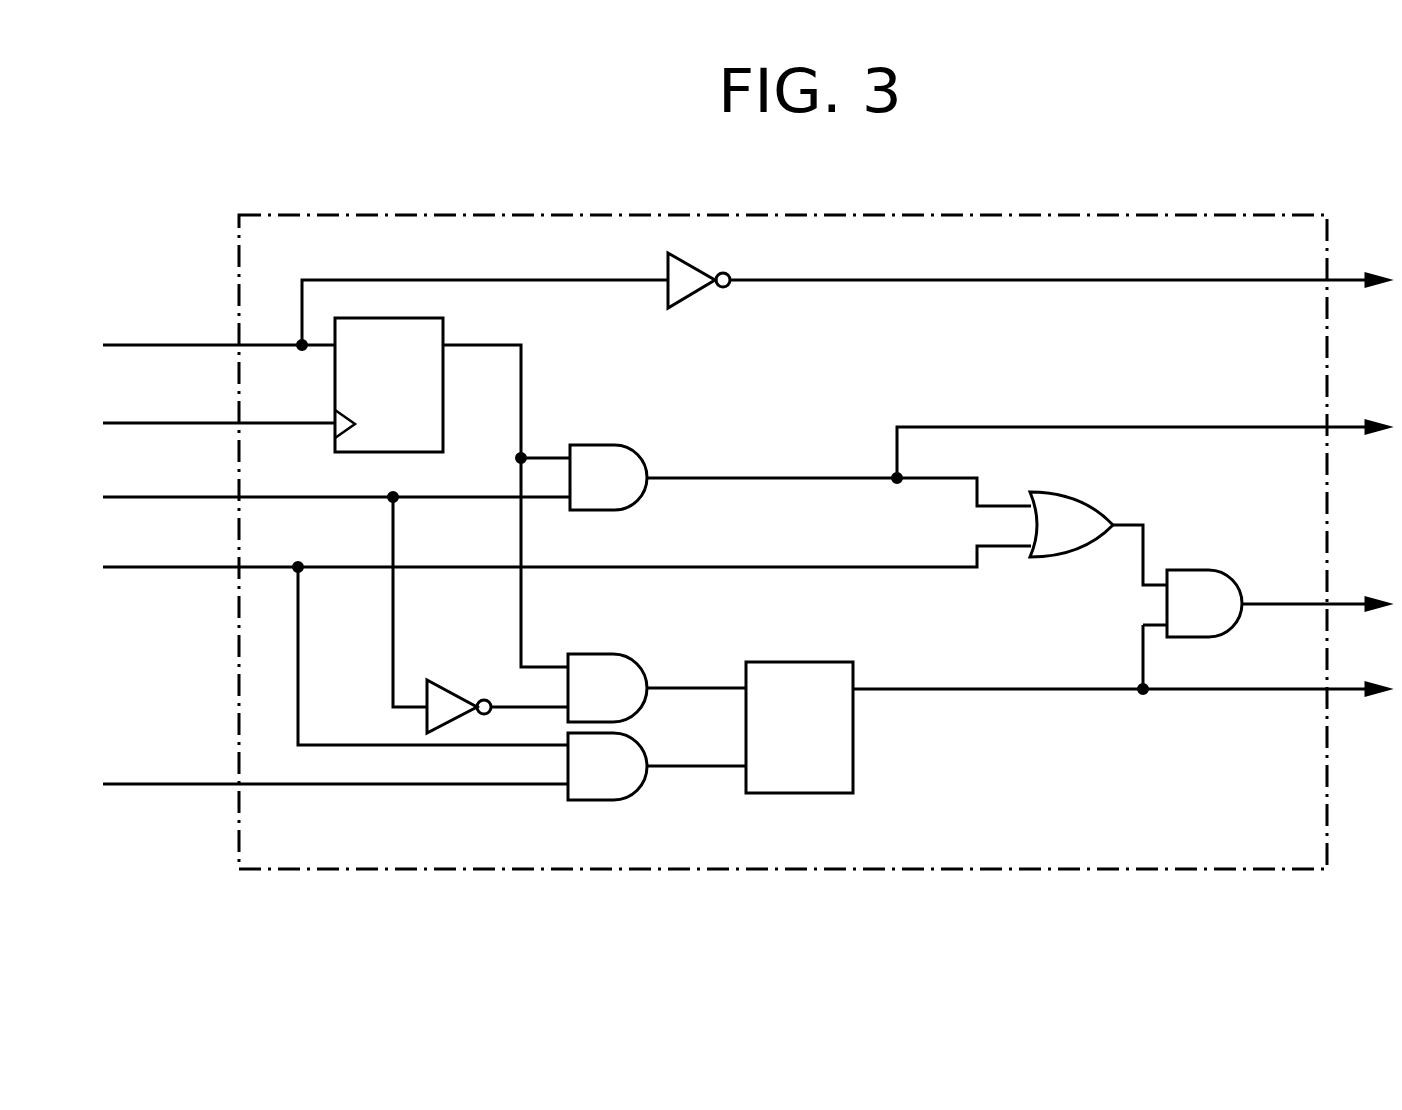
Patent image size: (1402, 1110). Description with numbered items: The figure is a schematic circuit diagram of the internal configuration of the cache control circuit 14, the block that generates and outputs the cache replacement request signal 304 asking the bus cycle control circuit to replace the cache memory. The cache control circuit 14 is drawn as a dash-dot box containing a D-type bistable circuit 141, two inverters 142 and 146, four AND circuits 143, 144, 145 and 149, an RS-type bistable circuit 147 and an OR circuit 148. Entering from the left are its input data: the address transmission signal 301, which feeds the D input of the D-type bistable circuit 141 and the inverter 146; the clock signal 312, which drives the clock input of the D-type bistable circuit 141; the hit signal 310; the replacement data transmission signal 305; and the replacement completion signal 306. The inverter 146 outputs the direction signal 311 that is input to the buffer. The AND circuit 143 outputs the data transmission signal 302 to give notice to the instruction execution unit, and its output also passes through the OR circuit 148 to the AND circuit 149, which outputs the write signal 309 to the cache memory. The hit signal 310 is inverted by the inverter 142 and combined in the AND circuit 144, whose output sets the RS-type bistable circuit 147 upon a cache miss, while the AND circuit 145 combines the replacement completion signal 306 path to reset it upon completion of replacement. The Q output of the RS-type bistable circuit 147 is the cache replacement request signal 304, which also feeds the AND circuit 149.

The cache control circuit 14 is at (928, 215).
The D-type bistable circuit 141 is at (443, 328).
The inverter 142 is at (445, 680).
The AND circuit 143 is at (643, 460).
The AND circuit 144 is at (607, 652).
The AND circuit 145 is at (613, 800).
The inverter 146 is at (693, 298).
The RS-type bistable circuit 147 is at (853, 758).
The OR circuit 148 is at (1050, 558).
The AND circuit 149 is at (1192, 570).
The address transmission signal 301 is at (172, 345).
The data transmission signal 302 is at (1172, 427).
The cache replacement request signal 304 is at (1225, 692).
The replacement data transmission signal 305 is at (162, 567).
The replacement completion signal 306 is at (162, 784).
The write signal 309 is at (1280, 604).
The hit signal 310 is at (172, 497).
The direction signal 311 is at (988, 283).
The clock signal 312 is at (172, 423).